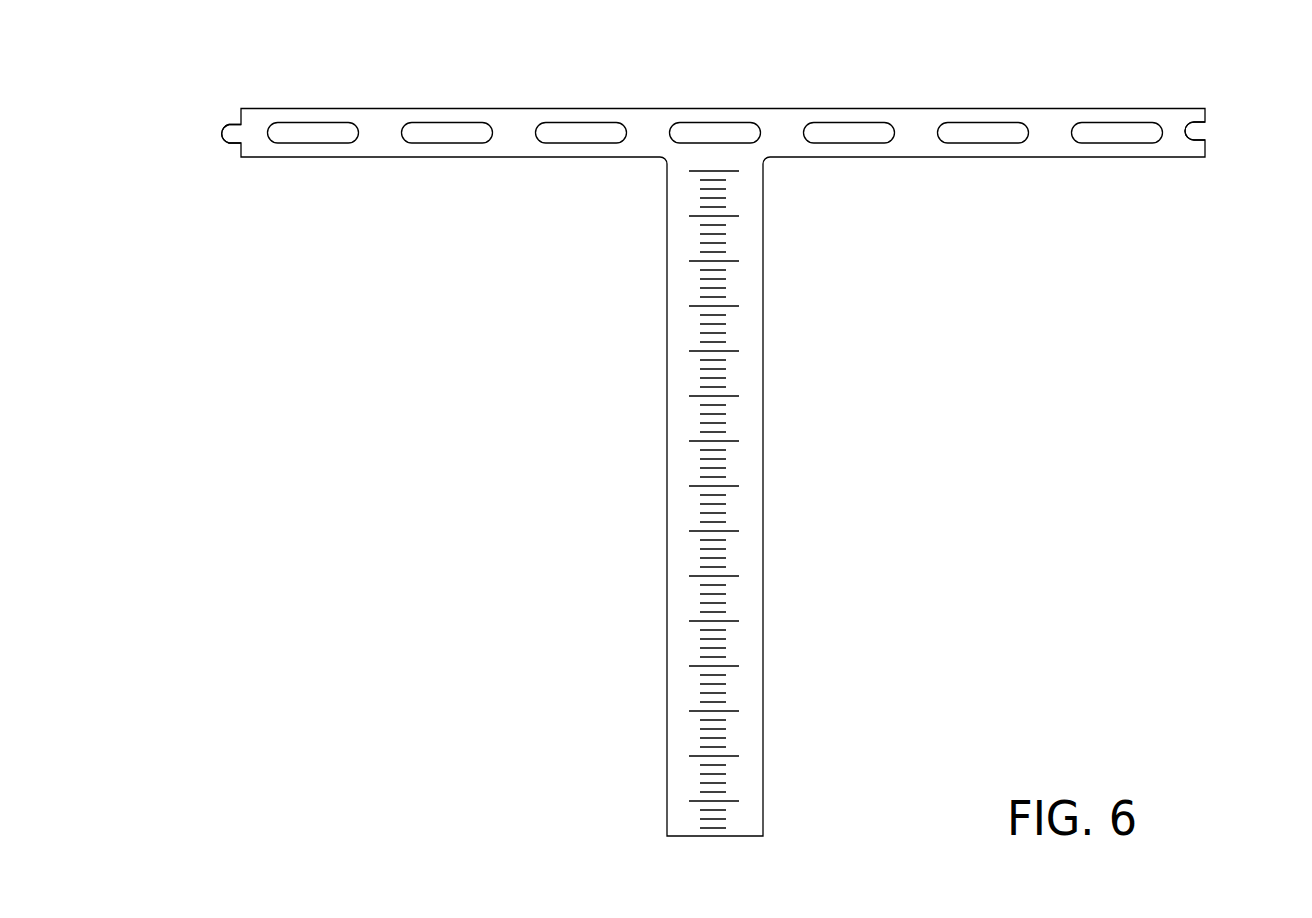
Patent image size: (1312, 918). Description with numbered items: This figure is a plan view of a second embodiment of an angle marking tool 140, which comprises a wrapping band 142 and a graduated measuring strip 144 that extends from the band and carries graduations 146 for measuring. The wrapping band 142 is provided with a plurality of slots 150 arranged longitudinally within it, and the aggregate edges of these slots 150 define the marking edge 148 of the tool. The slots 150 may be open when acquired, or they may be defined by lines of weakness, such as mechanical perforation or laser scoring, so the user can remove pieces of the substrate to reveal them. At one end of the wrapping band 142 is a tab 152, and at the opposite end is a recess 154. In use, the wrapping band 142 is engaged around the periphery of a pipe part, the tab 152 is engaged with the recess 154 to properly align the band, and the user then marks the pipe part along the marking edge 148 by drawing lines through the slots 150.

The angle marking tool 140 is at (739, 432).
The wrapping band 142 is at (1047, 157).
The graduated measuring strip 144 is at (763, 510).
The graduations 146 is at (733, 666).
The marking edge 148 is at (722, 133).
The slots 150 is at (447, 133).
The tab 152 is at (221, 132).
The recess 154 is at (1195, 131).